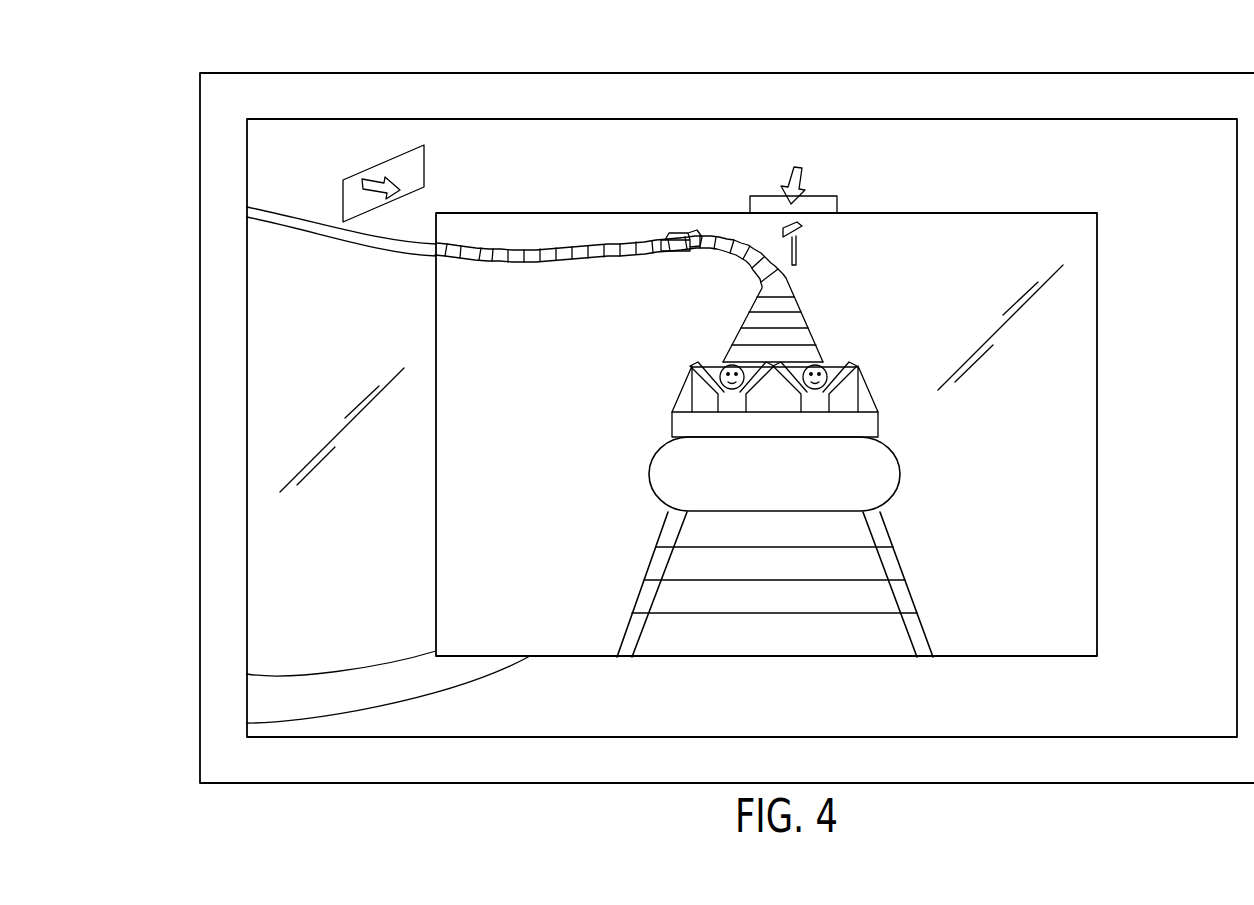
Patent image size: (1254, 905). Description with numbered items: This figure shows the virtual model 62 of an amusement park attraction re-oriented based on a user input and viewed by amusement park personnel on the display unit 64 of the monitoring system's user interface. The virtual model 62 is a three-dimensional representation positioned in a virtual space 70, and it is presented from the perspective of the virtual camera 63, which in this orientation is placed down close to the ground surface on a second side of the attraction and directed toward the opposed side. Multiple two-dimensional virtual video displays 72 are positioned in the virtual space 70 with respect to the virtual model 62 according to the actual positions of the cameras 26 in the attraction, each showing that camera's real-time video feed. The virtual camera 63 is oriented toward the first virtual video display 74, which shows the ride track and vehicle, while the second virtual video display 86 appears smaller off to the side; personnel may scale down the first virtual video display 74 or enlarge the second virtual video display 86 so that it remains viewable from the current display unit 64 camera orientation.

The camera 26 is at (797, 258).
The virtual model 62 is at (677, 375).
The virtual camera 63 is at (742, 385).
The display unit 64 is at (974, 119).
The virtual space 70 is at (297, 333).
The virtual video display 72 is at (678, 397).
The first virtual video display 74 is at (652, 213).
The second virtual video display 86 is at (376, 166).